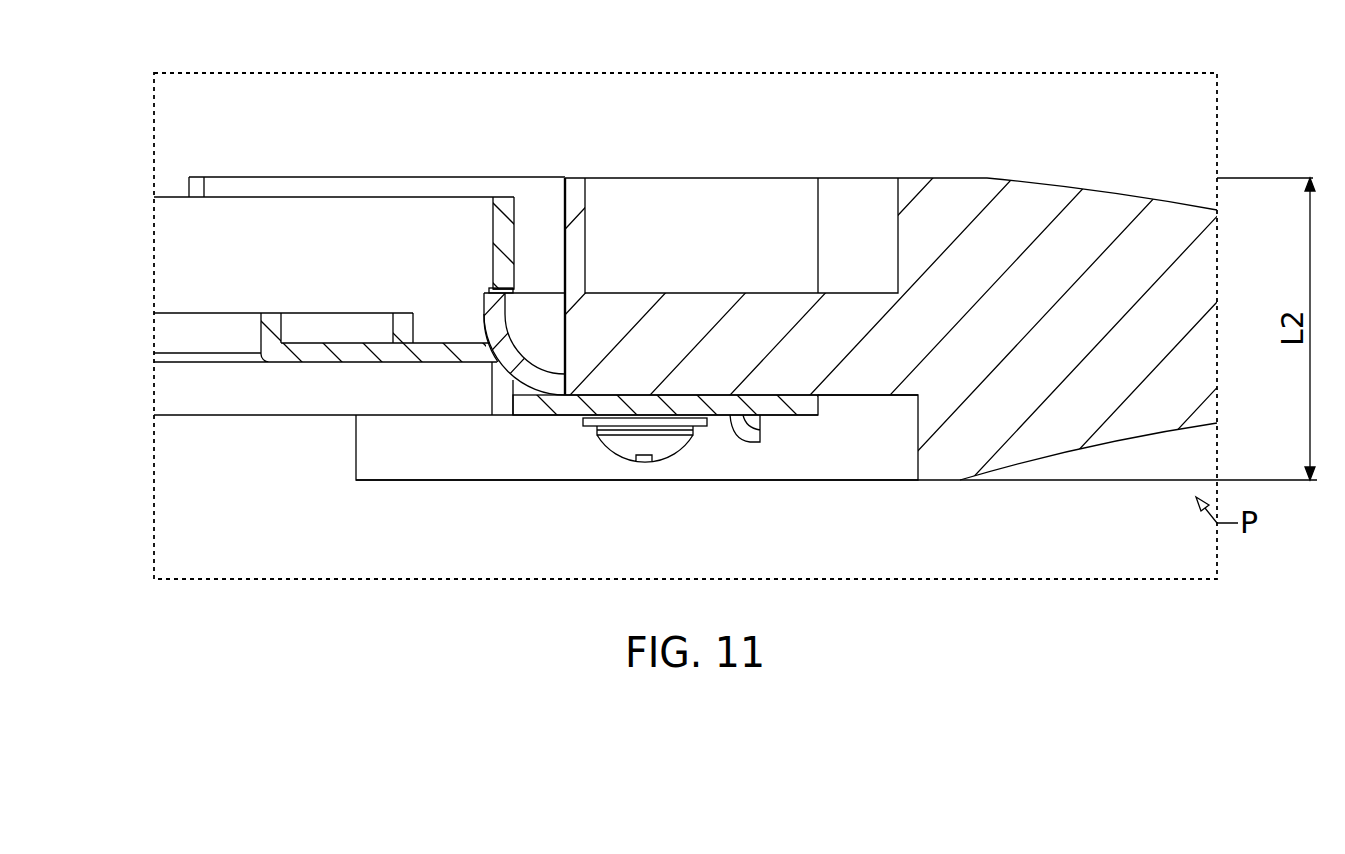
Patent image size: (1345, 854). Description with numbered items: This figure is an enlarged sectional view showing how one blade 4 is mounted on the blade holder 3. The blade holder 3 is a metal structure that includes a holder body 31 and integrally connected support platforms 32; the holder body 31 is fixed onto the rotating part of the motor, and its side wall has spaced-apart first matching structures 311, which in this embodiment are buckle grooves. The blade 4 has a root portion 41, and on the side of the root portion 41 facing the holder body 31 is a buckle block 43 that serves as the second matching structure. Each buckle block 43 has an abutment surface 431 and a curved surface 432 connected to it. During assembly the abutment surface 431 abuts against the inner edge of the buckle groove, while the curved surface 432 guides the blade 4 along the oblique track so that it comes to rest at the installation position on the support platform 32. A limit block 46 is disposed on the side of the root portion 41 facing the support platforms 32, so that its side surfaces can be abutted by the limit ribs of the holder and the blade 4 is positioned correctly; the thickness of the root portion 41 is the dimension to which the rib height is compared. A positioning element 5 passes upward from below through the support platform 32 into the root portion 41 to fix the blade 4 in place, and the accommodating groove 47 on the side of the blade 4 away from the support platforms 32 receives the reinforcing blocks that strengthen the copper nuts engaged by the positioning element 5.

The blade holder 3 is at (276, 205).
The holder body 31 is at (504, 213).
The first matching structure 311 is at (506, 282).
The support platform 32 is at (690, 403).
The blade 4 is at (1116, 196).
The root portion 41 is at (964, 192).
The buckle block 43 is at (500, 345).
The abutment surface 431 is at (478, 280).
The curved surface 432 is at (486, 380).
The limit block 46 is at (712, 318).
The accommodating groove 47 is at (631, 200).
The positioning element 5 is at (625, 455).